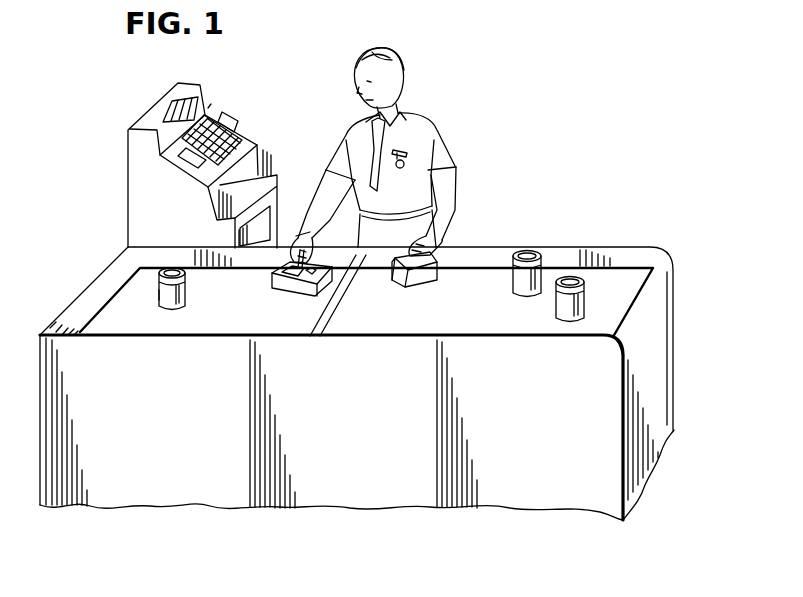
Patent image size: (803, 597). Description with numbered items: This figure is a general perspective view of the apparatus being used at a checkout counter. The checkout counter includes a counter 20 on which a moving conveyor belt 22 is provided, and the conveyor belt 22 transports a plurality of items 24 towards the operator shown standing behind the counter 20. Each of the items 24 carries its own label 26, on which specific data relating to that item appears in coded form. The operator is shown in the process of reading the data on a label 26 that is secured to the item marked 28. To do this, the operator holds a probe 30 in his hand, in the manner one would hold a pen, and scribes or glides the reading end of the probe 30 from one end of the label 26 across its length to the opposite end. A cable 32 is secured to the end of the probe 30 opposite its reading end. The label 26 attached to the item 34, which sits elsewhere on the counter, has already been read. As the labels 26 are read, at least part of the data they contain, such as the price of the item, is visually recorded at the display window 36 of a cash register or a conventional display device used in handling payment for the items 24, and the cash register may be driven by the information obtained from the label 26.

The counter 20 is at (670, 317).
The moving conveyor belt 22 is at (621, 284).
The items 24 is at (401, 282).
The label 26 is at (168, 264).
The item 28 is at (272, 284).
The probe 30 is at (311, 210).
The cable 32 is at (322, 230).
The item 34 is at (161, 298).
The display window 36 is at (201, 97).